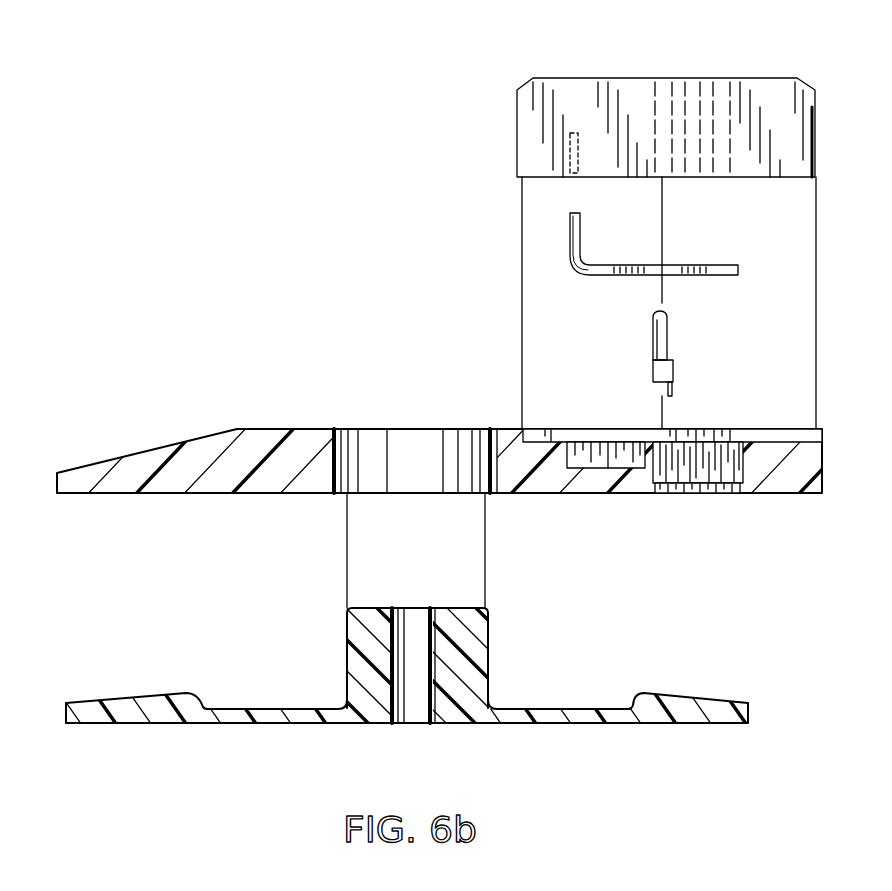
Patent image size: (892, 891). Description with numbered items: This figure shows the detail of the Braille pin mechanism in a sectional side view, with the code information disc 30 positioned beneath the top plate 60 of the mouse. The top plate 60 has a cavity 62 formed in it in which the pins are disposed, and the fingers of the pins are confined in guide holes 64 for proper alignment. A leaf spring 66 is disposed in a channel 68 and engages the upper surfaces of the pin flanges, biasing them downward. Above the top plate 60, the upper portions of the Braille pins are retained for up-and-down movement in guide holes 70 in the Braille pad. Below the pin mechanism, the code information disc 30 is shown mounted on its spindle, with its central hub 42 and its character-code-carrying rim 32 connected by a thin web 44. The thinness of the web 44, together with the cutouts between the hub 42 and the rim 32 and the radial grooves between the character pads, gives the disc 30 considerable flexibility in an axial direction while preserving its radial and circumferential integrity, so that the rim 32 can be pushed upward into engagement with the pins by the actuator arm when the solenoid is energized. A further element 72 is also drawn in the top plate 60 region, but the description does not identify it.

The code information disc 30 is at (416, 746).
The rim 32 is at (152, 712).
The hub 42 is at (470, 712).
The web 44 is at (578, 712).
The top plate 60 is at (260, 421).
The cavity 62 is at (713, 452).
The guide holes 64 is at (727, 493).
The leaf spring 66 is at (684, 264).
The channel 68 is at (621, 428).
The guide holes 70 is at (662, 100).
The cover strip 72 is at (540, 428).